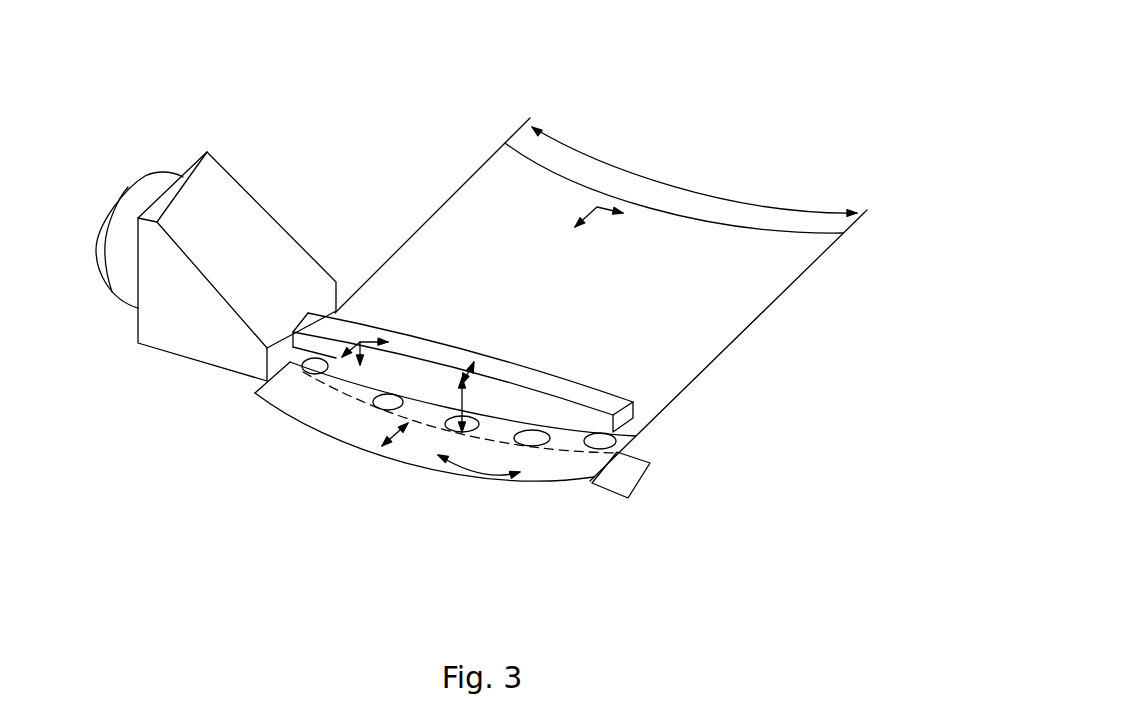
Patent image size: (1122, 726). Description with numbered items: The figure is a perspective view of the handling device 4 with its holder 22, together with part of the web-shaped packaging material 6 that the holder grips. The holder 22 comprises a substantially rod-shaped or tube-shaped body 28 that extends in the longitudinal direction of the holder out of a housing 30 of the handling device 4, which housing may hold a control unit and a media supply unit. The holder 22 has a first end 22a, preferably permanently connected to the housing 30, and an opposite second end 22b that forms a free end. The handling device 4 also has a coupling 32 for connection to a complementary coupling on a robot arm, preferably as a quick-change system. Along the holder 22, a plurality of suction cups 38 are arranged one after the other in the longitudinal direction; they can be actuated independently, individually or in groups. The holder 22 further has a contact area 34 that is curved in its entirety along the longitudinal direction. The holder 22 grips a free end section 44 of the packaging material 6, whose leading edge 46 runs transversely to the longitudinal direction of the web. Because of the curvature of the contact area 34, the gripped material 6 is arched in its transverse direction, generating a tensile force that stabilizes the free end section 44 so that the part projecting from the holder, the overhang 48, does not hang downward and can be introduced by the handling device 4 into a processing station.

The handling device 4 is at (187, 409).
The web-shaped packaging material 6 is at (737, 280).
The holder 22 is at (561, 296).
The first end 22a is at (309, 314).
The second end 22b is at (630, 402).
The body 28 is at (600, 397).
The housing 30 is at (252, 228).
The coupling 32 is at (128, 188).
The contact area 34 is at (628, 438).
The suction cups 38 is at (303, 365).
The free end section 44 is at (568, 470).
The leading edge 46 is at (360, 446).
The overhang 48 is at (647, 482).